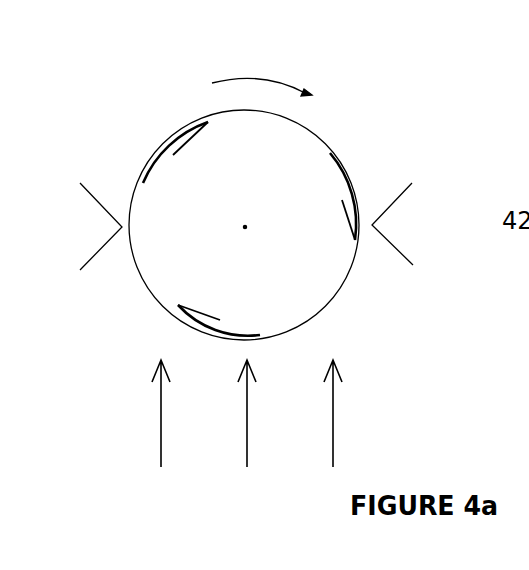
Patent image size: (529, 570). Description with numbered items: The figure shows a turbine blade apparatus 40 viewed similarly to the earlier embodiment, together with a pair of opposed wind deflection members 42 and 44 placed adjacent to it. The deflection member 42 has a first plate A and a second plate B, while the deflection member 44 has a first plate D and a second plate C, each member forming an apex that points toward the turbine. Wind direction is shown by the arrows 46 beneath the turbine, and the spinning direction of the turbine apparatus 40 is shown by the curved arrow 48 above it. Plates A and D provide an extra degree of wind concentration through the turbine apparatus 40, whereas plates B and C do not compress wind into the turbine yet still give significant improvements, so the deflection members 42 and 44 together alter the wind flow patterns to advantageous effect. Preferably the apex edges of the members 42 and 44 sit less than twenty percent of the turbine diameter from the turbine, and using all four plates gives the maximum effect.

The turbine blade apparatus 40 is at (348, 132).
The wind deflection member 42 is at (87, 229).
The wind deflection member 44 is at (397, 225).
The arrows 46 is at (247, 413).
The arrow 48 is at (280, 82).